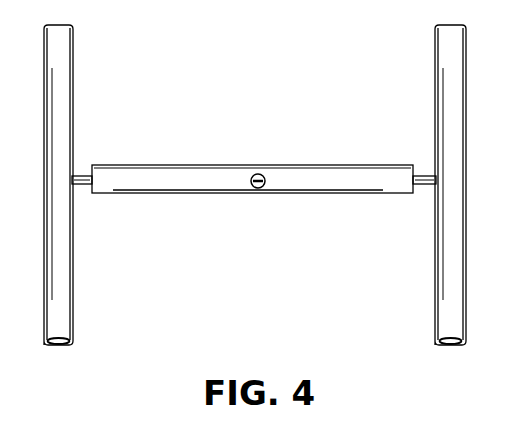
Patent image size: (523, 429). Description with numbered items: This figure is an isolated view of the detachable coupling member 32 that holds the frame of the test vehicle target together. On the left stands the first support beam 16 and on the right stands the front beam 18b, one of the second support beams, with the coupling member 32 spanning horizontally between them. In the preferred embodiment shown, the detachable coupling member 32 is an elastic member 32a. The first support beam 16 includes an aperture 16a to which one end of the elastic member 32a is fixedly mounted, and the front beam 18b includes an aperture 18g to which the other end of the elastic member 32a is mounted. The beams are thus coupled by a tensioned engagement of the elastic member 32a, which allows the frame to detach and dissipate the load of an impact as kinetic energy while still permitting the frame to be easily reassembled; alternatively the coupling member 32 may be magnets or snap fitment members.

The first support beam 16 is at (60, 45).
The front beam 18b is at (448, 57).
The detachable coupling member 32 is at (246, 153).
The elastic member 32a is at (80, 176).
The aperture 16a is at (75, 185).
The aperture 18g is at (433, 185).